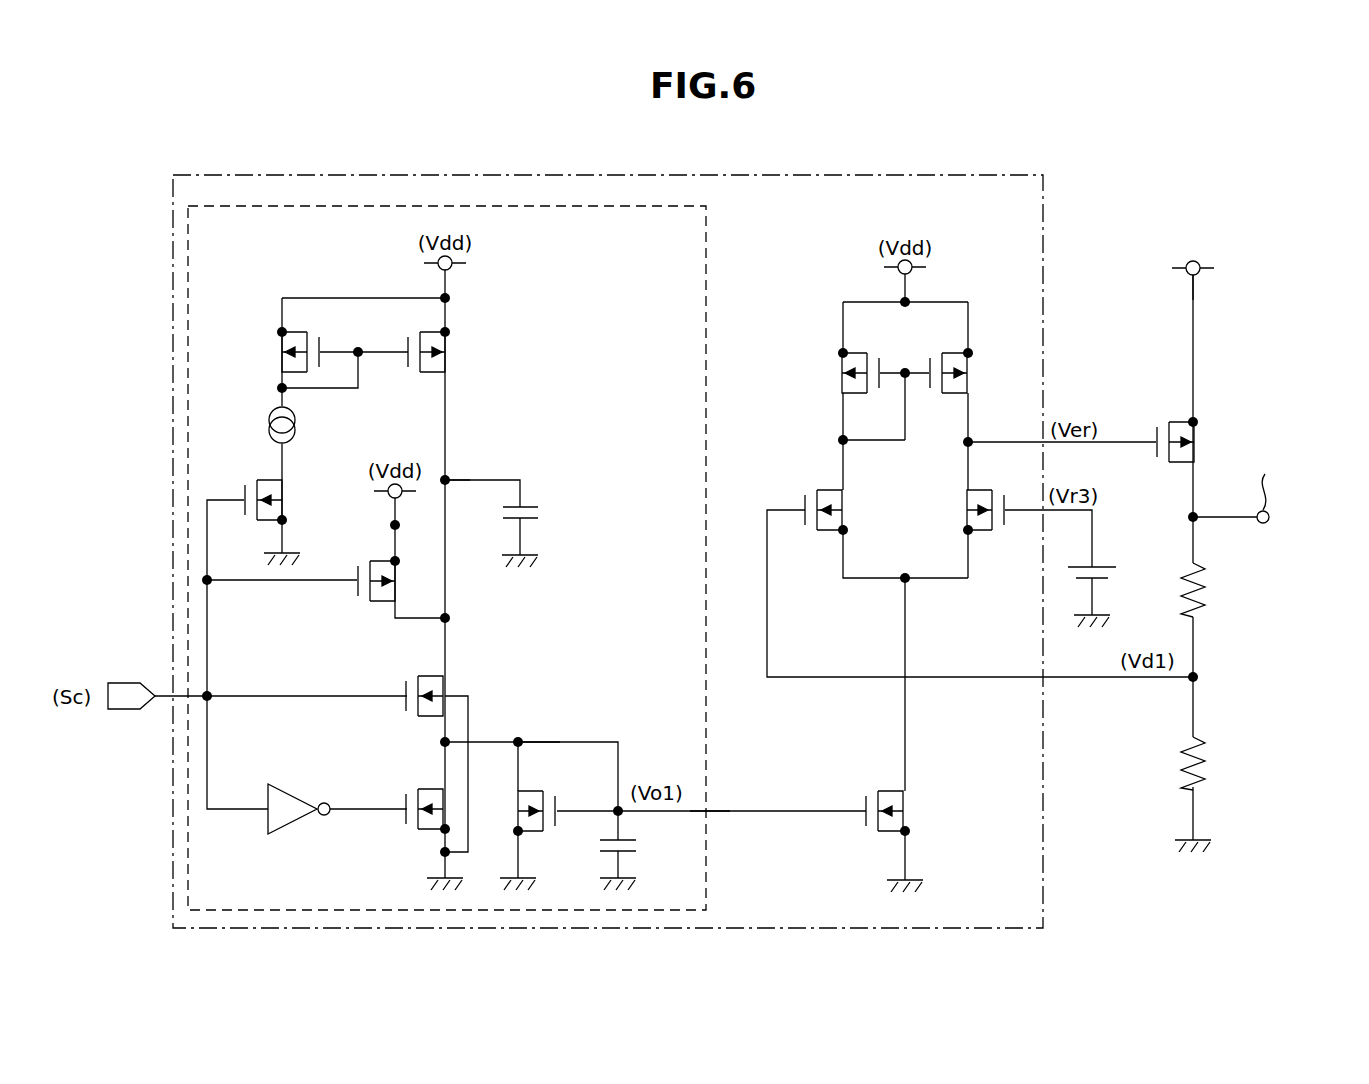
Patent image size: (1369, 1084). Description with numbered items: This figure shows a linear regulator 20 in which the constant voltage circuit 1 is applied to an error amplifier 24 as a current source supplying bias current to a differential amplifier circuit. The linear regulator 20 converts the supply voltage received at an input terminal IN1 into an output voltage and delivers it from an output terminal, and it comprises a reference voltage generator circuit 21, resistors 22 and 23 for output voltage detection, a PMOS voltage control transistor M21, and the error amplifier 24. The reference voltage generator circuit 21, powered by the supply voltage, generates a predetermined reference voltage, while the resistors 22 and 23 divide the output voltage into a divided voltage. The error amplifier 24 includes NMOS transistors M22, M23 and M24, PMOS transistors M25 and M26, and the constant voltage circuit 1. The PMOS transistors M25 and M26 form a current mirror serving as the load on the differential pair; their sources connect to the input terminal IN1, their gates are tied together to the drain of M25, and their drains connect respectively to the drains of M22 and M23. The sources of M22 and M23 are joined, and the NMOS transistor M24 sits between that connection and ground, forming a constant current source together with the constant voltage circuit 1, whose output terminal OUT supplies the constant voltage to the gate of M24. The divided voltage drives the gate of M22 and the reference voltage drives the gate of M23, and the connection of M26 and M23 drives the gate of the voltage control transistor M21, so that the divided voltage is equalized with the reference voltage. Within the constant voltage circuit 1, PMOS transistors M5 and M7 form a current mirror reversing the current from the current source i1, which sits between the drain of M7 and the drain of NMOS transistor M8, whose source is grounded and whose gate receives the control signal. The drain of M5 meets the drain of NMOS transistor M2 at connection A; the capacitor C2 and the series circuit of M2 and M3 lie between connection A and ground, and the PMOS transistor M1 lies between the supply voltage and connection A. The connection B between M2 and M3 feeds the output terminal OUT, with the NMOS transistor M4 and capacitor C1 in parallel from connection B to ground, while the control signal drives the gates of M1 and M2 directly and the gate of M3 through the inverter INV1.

The constant voltage circuit 1 is at (716, 288).
The linear regulator 20 is at (1162, 180).
The reference voltage generator circuit 21 is at (1107, 572).
The resistor 22 is at (1210, 590).
The resistor 23 is at (1210, 763).
The error amplifier 24 is at (916, 174).
The PMOS transistor M1 is at (375, 570).
The NMOS transistor M2 is at (423, 686).
The NMOS transistor M3 is at (423, 797).
The NMOS transistor M4 is at (537, 798).
The PMOS transistor M5 is at (425, 342).
The PMOS transistor M7 is at (302, 342).
The NMOS transistor M8 is at (262, 489).
The voltage control transistor M21 is at (1165, 429).
The NMOS transistor M22 is at (816, 498).
The NMOS transistor M23 is at (958, 510).
The NMOS transistor M24 is at (912, 811).
The PMOS transistor M25 is at (832, 373).
The PMOS transistor M26 is at (979, 373).
The capacitor C1 is at (635, 848).
The capacitor C2 is at (537, 515).
The inverter INV1 is at (296, 796).
The current source i1 is at (294, 425).
The input terminal IN1 is at (1199, 274).
The connection A is at (495, 478).
The connection B is at (548, 740).
The output terminal OUT is at (705, 808).